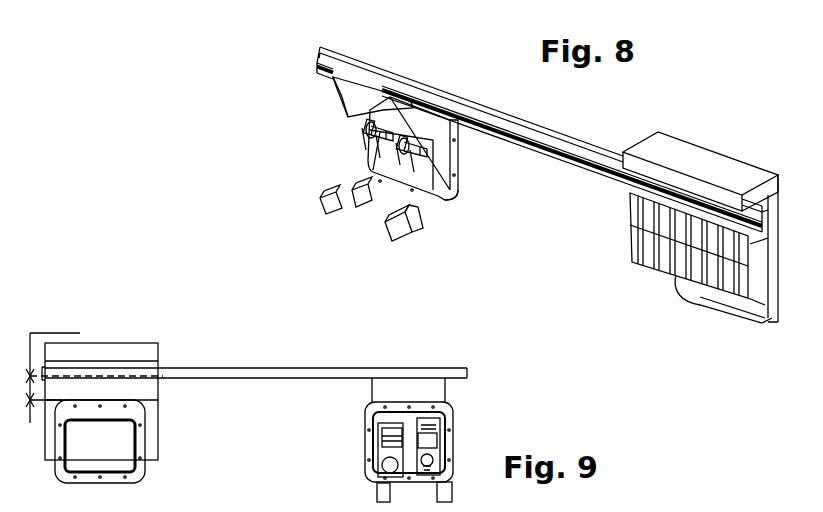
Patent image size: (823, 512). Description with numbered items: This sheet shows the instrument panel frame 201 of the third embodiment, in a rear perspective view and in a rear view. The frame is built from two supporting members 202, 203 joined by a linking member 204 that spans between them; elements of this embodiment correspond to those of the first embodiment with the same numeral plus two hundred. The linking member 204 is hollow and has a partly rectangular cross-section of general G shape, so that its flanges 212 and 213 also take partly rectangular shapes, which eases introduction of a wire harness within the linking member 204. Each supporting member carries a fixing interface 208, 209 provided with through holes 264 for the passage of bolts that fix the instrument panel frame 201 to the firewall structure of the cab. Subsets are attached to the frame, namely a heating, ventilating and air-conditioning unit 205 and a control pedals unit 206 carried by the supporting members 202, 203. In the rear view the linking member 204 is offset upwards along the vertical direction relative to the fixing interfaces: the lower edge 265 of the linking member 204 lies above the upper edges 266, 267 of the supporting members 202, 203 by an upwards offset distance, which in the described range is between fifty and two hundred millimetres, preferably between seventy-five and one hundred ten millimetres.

In FIG. 8, the instrument panel frame 201 is at (668, 78).
In FIG. 9, the instrument panel frame 201 is at (498, 414).
In FIG. 8, the supporting member 202 is at (471, 187).
In FIG. 9, the supporting member 202 is at (151, 481).
In FIG. 8, the supporting member 203 is at (739, 321).
In FIG. 9, the supporting member 203 is at (358, 455).
In FIG. 8, the linking member 204 is at (556, 140).
In FIG. 9, the linking member 204 is at (225, 369).
In FIG. 8, the heating, ventilating and air-conditioning unit 205 is at (614, 221).
In FIG. 8, the control pedals unit 206 is at (311, 208).
In FIG. 9, the fixing interface 208 is at (130, 412).
In FIG. 9, the fixing interface 209 is at (362, 410).
In FIG. 8, the flange 212 is at (382, 76).
In FIG. 8, the flange 213 is at (757, 193).
In FIG. 8, the through hole 264 is at (437, 196).
In FIG. 9, the through hole 264 is at (448, 422).
In FIG. 9, the lower edge of the linking member 265 is at (288, 380).
In FIG. 9, the upper edge of the supporting member 266 is at (90, 400).
In FIG. 9, the upper edge of the supporting member 267 is at (392, 400).